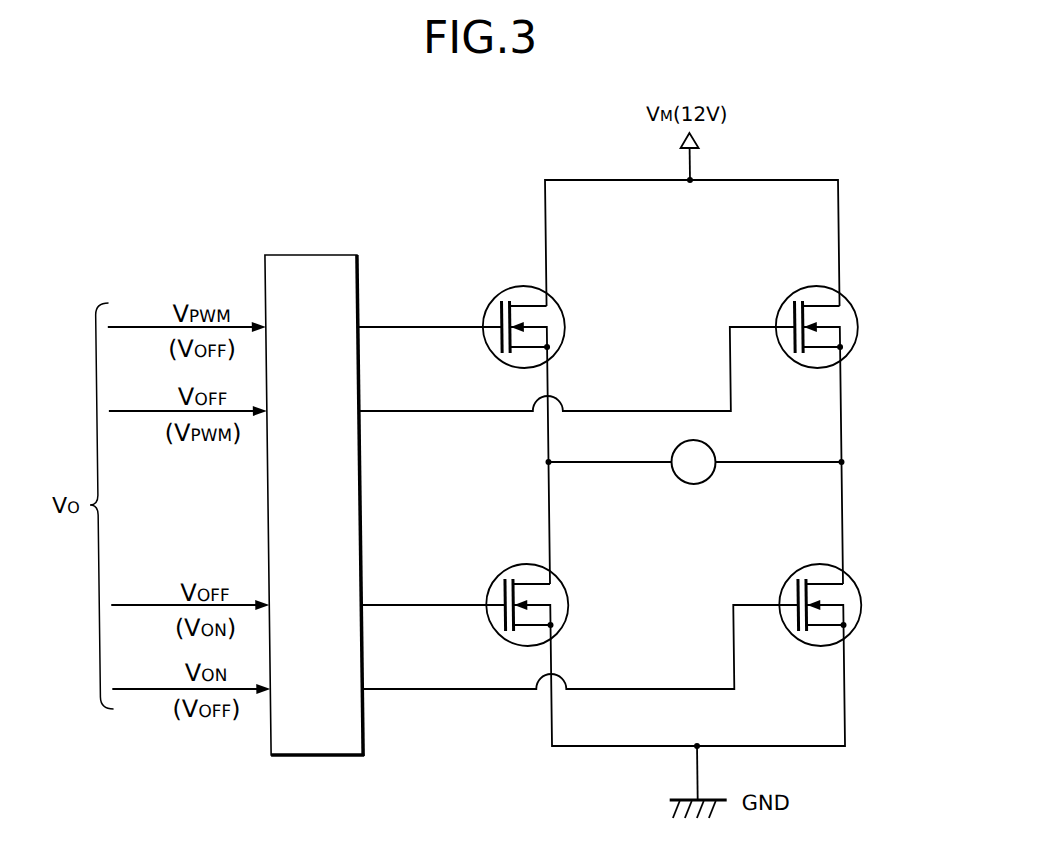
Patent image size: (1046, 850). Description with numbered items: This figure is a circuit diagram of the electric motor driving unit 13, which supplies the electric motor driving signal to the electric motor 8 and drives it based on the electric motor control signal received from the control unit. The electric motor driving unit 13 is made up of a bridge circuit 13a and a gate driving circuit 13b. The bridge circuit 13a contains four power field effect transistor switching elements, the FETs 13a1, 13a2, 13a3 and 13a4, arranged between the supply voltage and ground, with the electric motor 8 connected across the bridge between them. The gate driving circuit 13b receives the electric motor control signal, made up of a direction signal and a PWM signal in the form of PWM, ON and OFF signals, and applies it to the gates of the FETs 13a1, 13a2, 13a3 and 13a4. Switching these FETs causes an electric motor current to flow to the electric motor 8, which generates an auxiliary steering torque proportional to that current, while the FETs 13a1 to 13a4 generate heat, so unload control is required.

The electric motor driving unit 13 is at (438, 182).
The bridge circuit 13a is at (795, 180).
The gate driving circuit 13b is at (311, 255).
The FET 13a1 is at (561, 306).
The FET 13a2 is at (851, 302).
The FET 13a3 is at (560, 583).
The FET 13a4 is at (853, 580).
The electric motor 8 is at (707, 447).